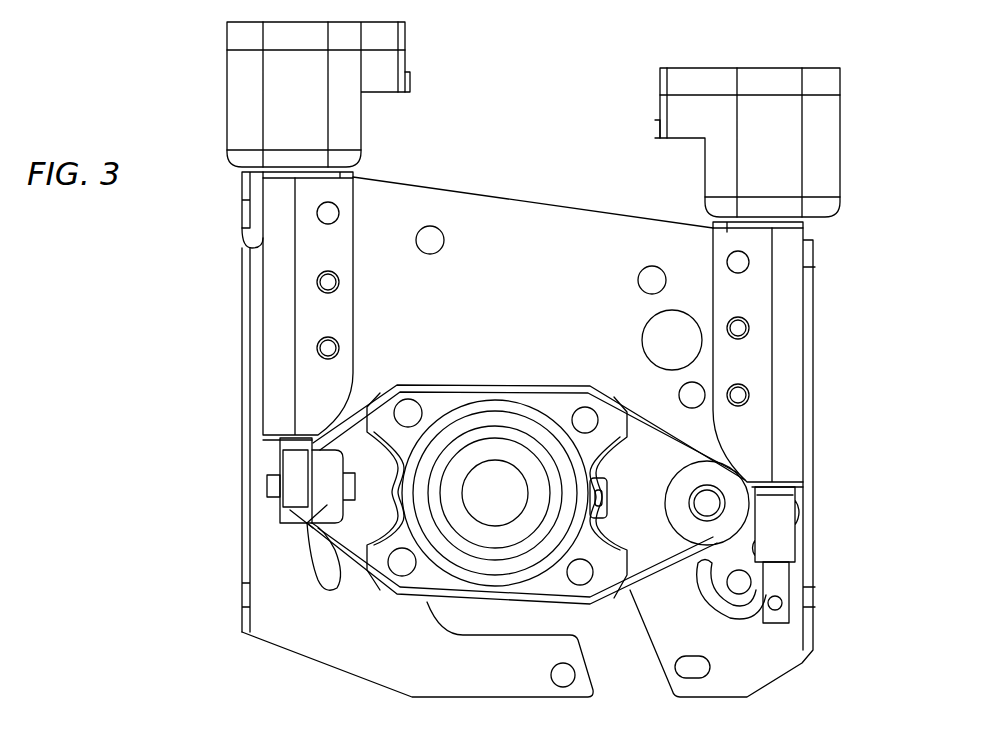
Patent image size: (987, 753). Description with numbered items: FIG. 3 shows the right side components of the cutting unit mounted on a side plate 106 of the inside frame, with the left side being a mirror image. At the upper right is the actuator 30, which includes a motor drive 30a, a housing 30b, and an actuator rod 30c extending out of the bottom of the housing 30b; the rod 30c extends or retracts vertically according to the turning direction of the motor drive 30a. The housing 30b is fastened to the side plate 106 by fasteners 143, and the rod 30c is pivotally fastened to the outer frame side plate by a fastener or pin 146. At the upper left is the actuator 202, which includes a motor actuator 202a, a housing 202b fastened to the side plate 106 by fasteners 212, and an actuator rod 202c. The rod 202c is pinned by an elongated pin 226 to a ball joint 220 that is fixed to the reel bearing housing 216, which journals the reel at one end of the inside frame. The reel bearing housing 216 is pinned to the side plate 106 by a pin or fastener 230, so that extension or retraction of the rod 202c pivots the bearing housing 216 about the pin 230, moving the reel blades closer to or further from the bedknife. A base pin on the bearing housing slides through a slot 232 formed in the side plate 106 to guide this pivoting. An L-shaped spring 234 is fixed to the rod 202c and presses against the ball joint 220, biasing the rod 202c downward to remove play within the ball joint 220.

The side plate 106 is at (520, 198).
The actuator 202 is at (331, 231).
The motor actuator 202a is at (285, 40).
The housing 202b is at (314, 306).
The actuator rod 202c is at (249, 475).
The fasteners 212 is at (320, 350).
The reel bearing housing 216 is at (385, 390).
The ball joint 220 is at (313, 515).
The elongated pin 226 is at (293, 472).
The pin or fastener 230 is at (703, 505).
The slot 232 is at (320, 592).
The L-shaped spring 234 is at (327, 505).
The actuator 30 is at (765, 277).
The motor drive 30a is at (718, 170).
The housing 30b is at (761, 354).
The actuator rod 30c is at (824, 602).
The fasteners 143 is at (740, 262).
The fastener or pin 146 is at (776, 610).